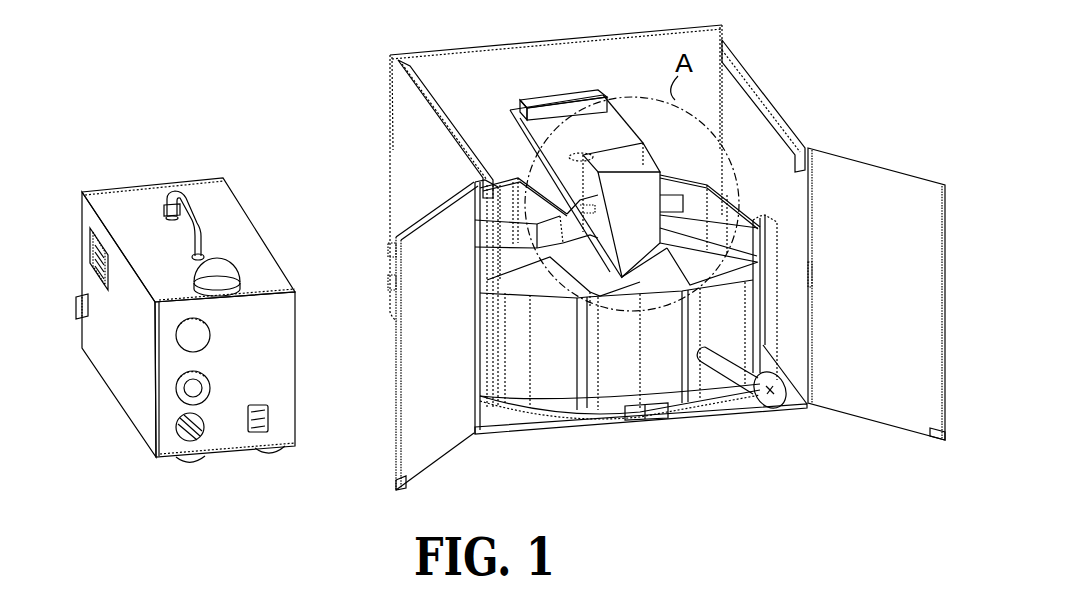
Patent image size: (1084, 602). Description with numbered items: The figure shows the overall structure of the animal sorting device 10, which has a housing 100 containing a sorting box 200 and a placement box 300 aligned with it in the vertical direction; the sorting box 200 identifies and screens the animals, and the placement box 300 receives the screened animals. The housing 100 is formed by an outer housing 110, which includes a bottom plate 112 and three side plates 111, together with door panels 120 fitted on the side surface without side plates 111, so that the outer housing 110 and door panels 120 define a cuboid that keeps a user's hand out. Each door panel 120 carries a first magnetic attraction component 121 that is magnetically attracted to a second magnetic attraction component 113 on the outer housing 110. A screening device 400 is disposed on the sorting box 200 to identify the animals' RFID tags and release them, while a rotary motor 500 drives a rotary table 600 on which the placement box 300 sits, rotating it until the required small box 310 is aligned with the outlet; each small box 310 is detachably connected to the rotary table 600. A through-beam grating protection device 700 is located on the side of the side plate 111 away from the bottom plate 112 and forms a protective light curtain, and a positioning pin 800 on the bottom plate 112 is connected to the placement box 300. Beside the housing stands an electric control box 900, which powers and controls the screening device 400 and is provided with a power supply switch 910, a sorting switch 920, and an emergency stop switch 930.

The animal sorting device 10 is at (262, 92).
The housing 100 is at (415, 196).
The outer housing 110 is at (585, 45).
The side plate 111 is at (470, 55).
The bottom plate 112 is at (540, 428).
The second magnetic attraction component 113 is at (652, 420).
The door panel 120 is at (900, 188).
The first magnetic attraction component 121 is at (396, 482).
The sorting box 200 is at (545, 182).
The placement box 300 is at (518, 338).
The small box 310 is at (770, 296).
The screening device 400 is at (480, 240).
The rotary motor 500 is at (608, 120).
The rotary table 600 is at (502, 408).
The through-beam grating protection device 700 is at (430, 106).
The positioning pin 800 is at (772, 405).
The electric control box 900 is at (105, 330).
The power supply switch 910 is at (188, 438).
The sorting switch 920 is at (190, 342).
The emergency stop switch 930 is at (190, 390).